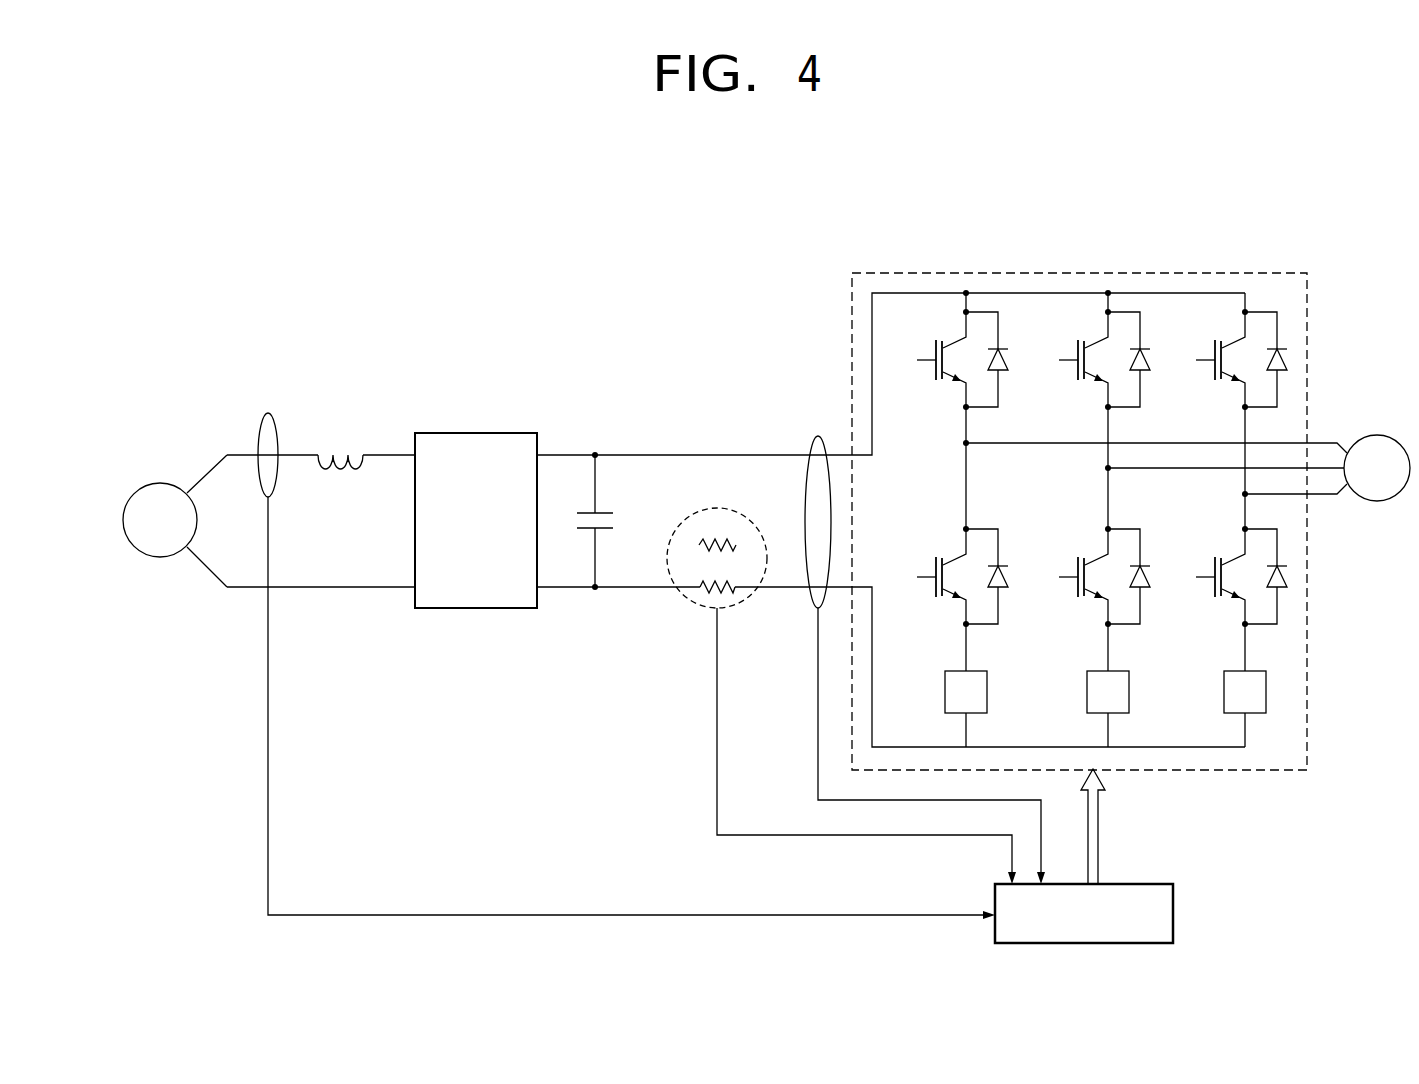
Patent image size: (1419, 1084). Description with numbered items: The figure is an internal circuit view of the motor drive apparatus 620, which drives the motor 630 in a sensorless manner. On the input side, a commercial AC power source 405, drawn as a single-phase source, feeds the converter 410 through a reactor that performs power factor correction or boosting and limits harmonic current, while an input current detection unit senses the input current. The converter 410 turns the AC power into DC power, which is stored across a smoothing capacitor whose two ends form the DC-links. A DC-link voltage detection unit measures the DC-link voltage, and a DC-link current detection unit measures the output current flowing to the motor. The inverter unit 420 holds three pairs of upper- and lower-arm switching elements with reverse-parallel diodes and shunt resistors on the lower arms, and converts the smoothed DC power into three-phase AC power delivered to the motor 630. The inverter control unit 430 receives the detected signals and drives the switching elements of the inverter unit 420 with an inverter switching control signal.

The commercial AC power source 405 is at (160, 483).
The converter 410 is at (473, 433).
The inverter unit 420 is at (1078, 272).
The inverter control unit 430 is at (1143, 884).
The motor drive apparatus 620 is at (260, 317).
The motor 630 is at (1377, 435).